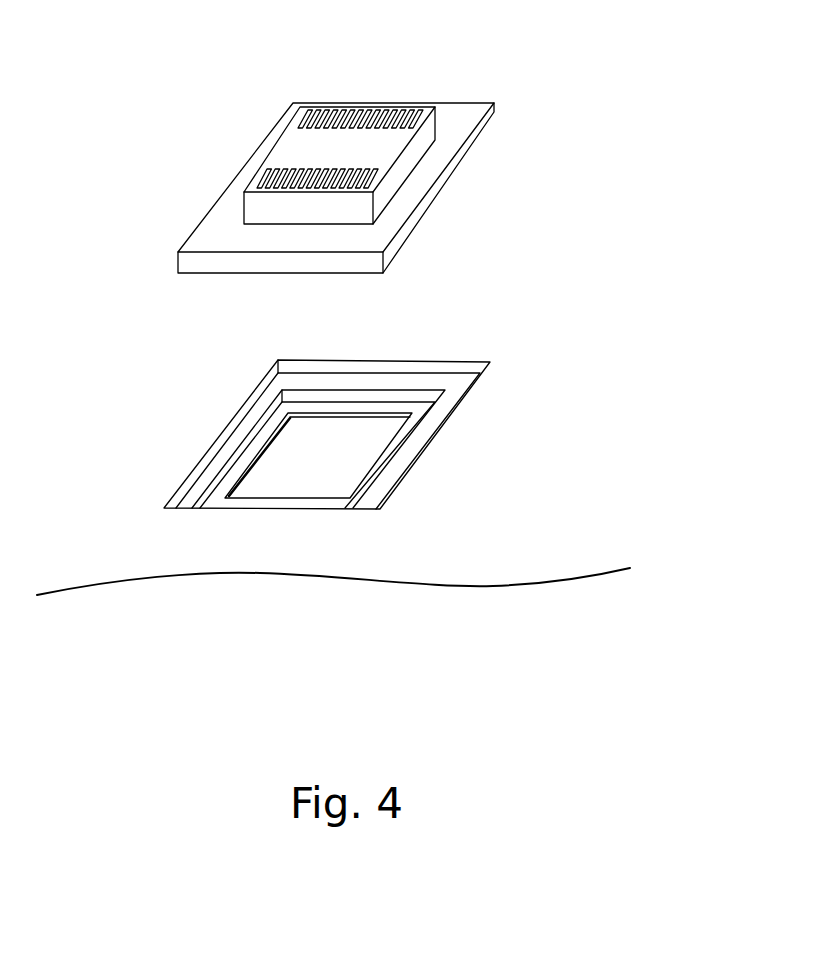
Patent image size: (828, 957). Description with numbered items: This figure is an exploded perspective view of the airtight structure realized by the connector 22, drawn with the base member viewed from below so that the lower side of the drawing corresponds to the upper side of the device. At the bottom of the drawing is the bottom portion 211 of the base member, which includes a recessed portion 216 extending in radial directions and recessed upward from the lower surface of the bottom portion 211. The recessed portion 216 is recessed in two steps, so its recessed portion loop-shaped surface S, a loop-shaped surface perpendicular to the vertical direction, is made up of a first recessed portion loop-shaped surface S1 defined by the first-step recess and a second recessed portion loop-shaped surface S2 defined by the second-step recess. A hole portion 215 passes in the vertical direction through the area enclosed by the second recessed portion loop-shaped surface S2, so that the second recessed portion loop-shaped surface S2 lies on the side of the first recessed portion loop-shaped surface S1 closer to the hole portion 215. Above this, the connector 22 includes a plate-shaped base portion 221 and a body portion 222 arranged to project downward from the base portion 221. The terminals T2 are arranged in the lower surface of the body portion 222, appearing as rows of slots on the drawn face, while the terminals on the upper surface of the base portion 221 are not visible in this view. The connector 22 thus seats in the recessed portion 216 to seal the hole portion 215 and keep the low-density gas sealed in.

The connector 22 is at (363, 136).
The base portion 221 is at (495, 103).
The body portion 222 is at (280, 138).
The terminals T2 is at (303, 110).
The recessed portion 216 is at (452, 363).
The recessed portion loop-shaped surface S is at (318, 390).
The first recessed portion loop-shaped surface S1 is at (380, 386).
The second recessed portion loop-shaped surface S2 is at (395, 403).
The hole portion 215 is at (262, 445).
The bottom portion 211 is at (529, 545).